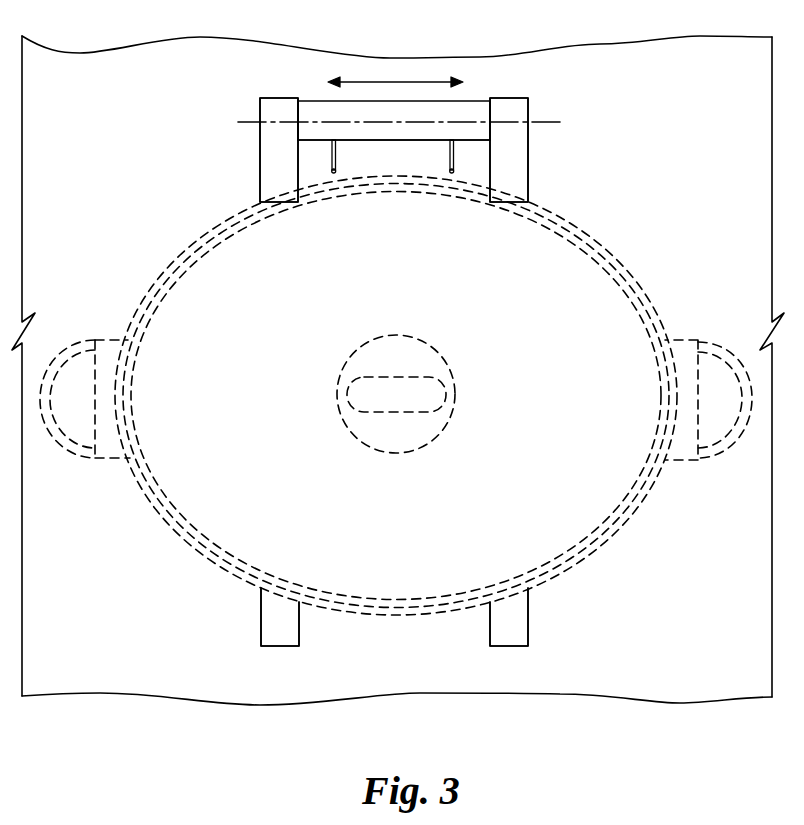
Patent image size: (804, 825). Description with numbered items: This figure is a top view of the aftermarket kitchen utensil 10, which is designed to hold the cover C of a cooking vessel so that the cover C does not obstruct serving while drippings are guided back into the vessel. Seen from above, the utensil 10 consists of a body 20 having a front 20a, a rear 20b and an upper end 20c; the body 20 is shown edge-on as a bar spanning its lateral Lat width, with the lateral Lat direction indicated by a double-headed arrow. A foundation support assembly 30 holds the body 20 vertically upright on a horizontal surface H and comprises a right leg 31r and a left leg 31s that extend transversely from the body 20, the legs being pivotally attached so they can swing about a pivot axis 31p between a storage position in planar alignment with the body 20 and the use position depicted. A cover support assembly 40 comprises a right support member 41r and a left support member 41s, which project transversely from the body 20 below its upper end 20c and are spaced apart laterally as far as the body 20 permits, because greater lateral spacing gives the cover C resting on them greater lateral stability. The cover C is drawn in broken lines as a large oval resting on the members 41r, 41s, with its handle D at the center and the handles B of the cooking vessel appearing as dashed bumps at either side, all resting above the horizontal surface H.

The utensil 10 is at (552, 95).
The body 20 is at (483, 101).
The front surface of body 20a is at (470, 140).
The rear surface of body 20b is at (313, 100).
The upper end of body 20c is at (475, 108).
The foundation support assembly 30 is at (246, 102).
The pivot axis of legs 31p is at (238, 123).
The right leg 31r is at (260, 170).
The left leg 31s is at (530, 107).
The cover support assembly 40 is at (398, 197).
The right support member 41r is at (332, 158).
The left support member 41s is at (456, 158).
The lateral direction of body Lat is at (385, 81).
The handle on cooking vessel B is at (714, 345).
The cover of cooking vessel C is at (233, 411).
The handle on cover D is at (404, 405).
The horizontal surface H is at (106, 613).